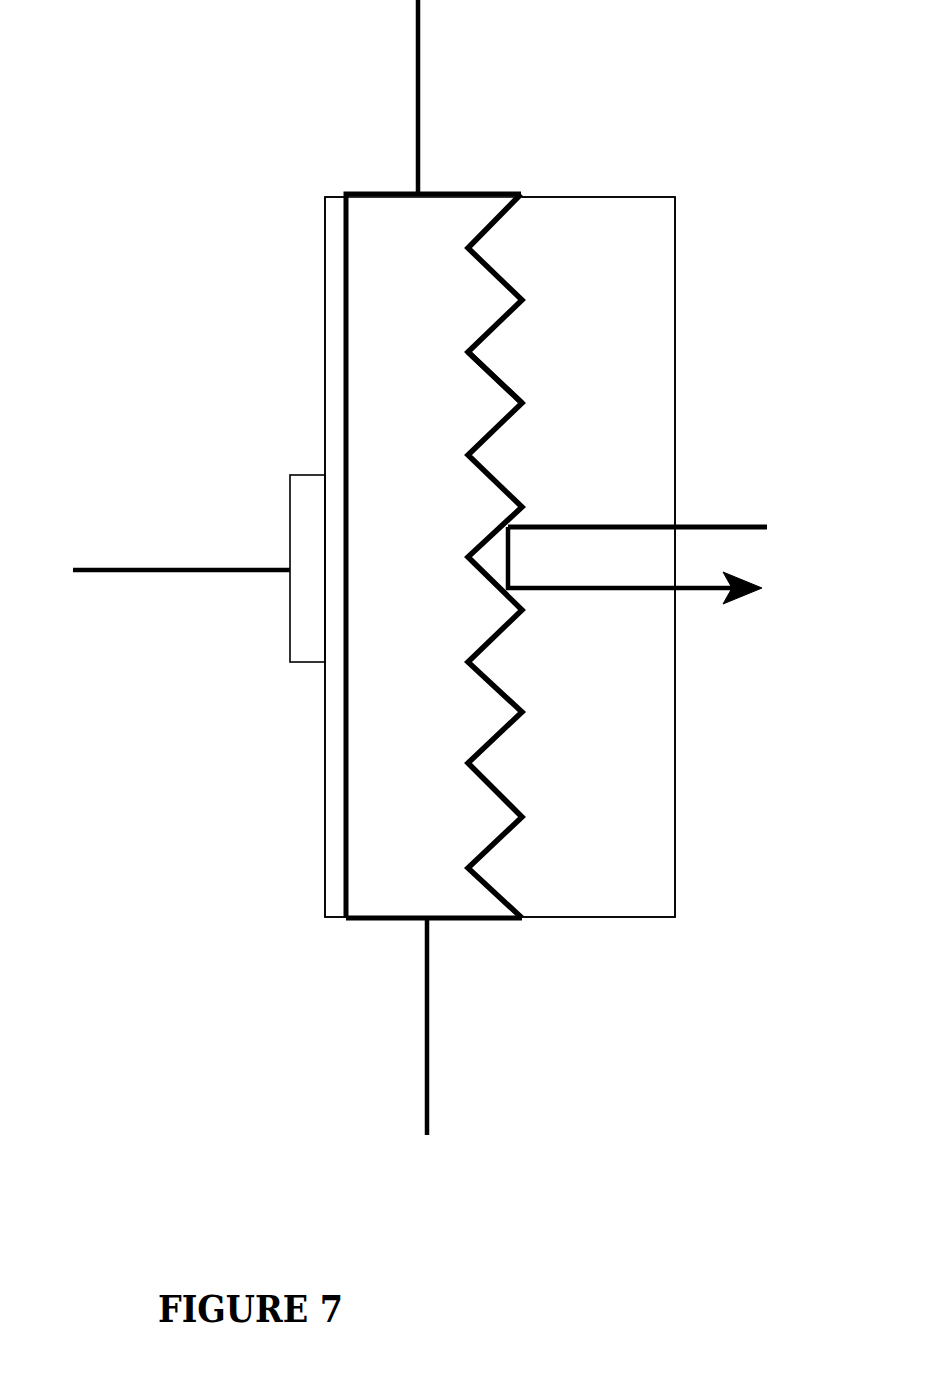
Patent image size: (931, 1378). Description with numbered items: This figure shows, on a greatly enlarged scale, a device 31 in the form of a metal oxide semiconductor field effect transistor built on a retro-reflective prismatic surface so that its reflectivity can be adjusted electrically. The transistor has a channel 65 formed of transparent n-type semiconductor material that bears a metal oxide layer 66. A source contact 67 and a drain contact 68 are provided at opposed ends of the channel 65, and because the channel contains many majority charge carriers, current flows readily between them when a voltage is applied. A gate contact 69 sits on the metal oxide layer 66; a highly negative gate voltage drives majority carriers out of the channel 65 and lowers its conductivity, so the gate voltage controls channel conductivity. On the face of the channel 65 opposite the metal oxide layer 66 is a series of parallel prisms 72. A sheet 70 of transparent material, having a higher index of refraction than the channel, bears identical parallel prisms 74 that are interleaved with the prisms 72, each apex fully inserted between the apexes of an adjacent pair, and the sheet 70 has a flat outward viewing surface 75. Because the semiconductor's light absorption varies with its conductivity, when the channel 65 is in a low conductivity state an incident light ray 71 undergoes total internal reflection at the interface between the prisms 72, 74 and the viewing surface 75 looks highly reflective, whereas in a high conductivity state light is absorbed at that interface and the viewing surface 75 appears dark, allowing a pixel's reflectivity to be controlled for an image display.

The photovoltaic cell / device 31 is at (703, 1005).
The channel 65 is at (392, 240).
The metal oxide layer 66 is at (333, 848).
The source contact 67 is at (420, 117).
The drain contact 68 is at (430, 1018).
The gate contact 69 is at (303, 515).
The sheet 70 is at (640, 888).
The incident light ray 71 is at (707, 522).
The prisms 72 is at (482, 288).
The prisms 74 is at (512, 360).
The viewing surface 75 is at (675, 738).